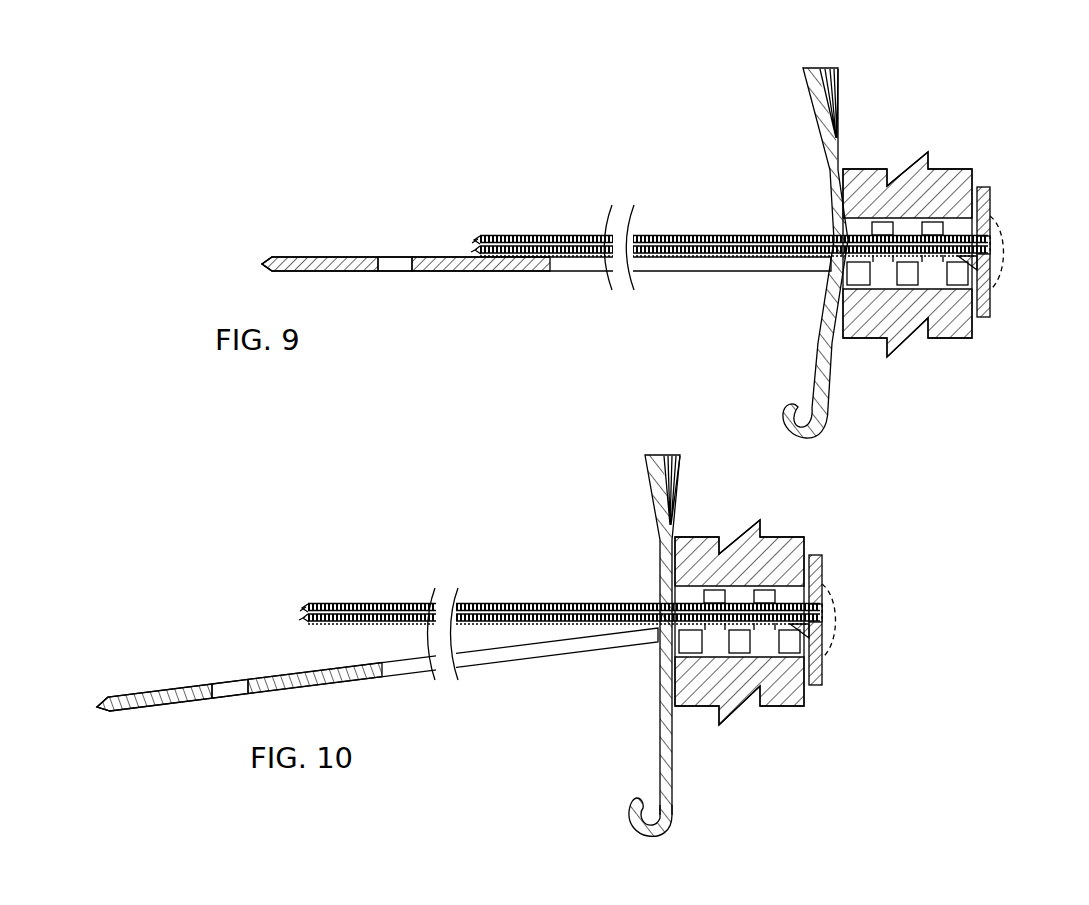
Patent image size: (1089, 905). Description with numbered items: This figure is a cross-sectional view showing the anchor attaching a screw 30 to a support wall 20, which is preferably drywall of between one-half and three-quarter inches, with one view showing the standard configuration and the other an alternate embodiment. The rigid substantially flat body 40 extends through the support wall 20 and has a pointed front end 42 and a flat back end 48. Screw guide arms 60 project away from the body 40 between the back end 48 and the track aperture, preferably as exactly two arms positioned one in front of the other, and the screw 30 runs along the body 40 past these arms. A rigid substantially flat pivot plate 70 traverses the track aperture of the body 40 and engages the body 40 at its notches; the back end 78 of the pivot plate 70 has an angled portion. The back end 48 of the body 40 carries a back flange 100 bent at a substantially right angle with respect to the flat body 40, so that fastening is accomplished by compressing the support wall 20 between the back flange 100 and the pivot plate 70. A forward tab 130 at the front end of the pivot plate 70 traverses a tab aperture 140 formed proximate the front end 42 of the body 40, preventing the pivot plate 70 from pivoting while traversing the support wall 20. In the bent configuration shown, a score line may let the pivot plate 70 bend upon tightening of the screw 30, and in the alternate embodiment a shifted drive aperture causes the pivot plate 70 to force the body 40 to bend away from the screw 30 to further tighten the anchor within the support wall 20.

In FIG. 9, the support wall 20 is at (905, 320).
In FIG. 10, the support wall 20 is at (690, 698).
In FIG. 9, the screw 30 is at (638, 235).
In FIG. 10, the screw 30 is at (470, 604).
In FIG. 9, the flat body 40 is at (478, 272).
In FIG. 10, the flat body 40 is at (380, 672).
In FIG. 9, the pointed front end 42 is at (264, 263).
In FIG. 10, the pointed front end 42 is at (108, 701).
In FIG. 9, the flat back end 48 is at (986, 190).
In FIG. 10, the flat back end 48 is at (818, 558).
In FIG. 9, the screw guide arm 60 is at (882, 222).
In FIG. 10, the screw guide arm 60 is at (712, 590).
In FIG. 9, the pivot plate 70 is at (823, 145).
In FIG. 10, the pivot plate 70 is at (658, 540).
In FIG. 9, the back end of pivot plate 78 is at (812, 66).
In FIG. 10, the back end of pivot plate 78 is at (648, 456).
In FIG. 9, the back flange 100 is at (990, 290).
In FIG. 10, the back flange 100 is at (822, 658).
In FIG. 10, the forward tab 130 is at (628, 802).
In FIG. 9, the tab aperture 140 is at (412, 258).
In FIG. 10, the tab aperture 140 is at (232, 688).